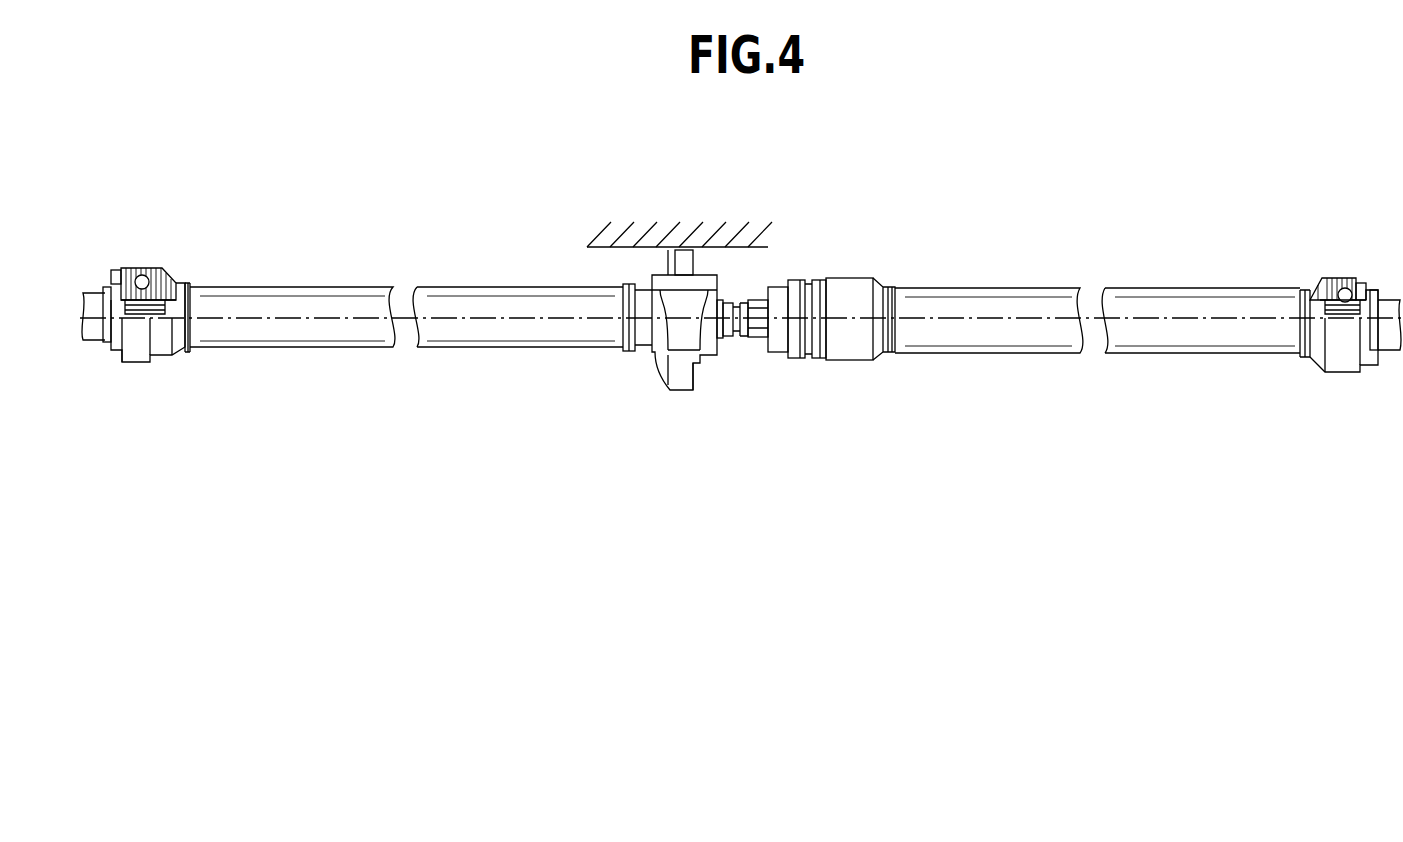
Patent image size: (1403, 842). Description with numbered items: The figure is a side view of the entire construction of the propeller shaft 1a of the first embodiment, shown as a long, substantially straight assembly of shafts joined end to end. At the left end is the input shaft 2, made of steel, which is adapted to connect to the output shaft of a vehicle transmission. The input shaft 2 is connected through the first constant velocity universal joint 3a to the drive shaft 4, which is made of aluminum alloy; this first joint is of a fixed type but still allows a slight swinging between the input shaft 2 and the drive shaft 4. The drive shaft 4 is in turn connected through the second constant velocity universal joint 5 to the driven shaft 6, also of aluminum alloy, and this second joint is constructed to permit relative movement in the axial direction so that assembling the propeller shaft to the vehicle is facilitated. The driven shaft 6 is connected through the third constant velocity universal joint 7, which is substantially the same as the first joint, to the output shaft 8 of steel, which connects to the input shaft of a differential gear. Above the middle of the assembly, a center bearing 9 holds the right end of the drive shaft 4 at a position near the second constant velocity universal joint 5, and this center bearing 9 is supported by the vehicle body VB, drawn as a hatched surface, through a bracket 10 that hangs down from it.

The propeller shaft 1a is at (568, 254).
The input shaft 2 is at (96, 295).
The first constant velocity universal joint 3a is at (168, 257).
The drive shaft 4 is at (330, 290).
The vehicle body VB is at (688, 228).
The second constant velocity universal joint 5 is at (840, 264).
The driven shaft 6 is at (1027, 292).
The third constant velocity universal joint 7 is at (1319, 277).
The output shaft 8 is at (1394, 302).
The center bearing 9 is at (715, 372).
The bracket 10 is at (683, 392).